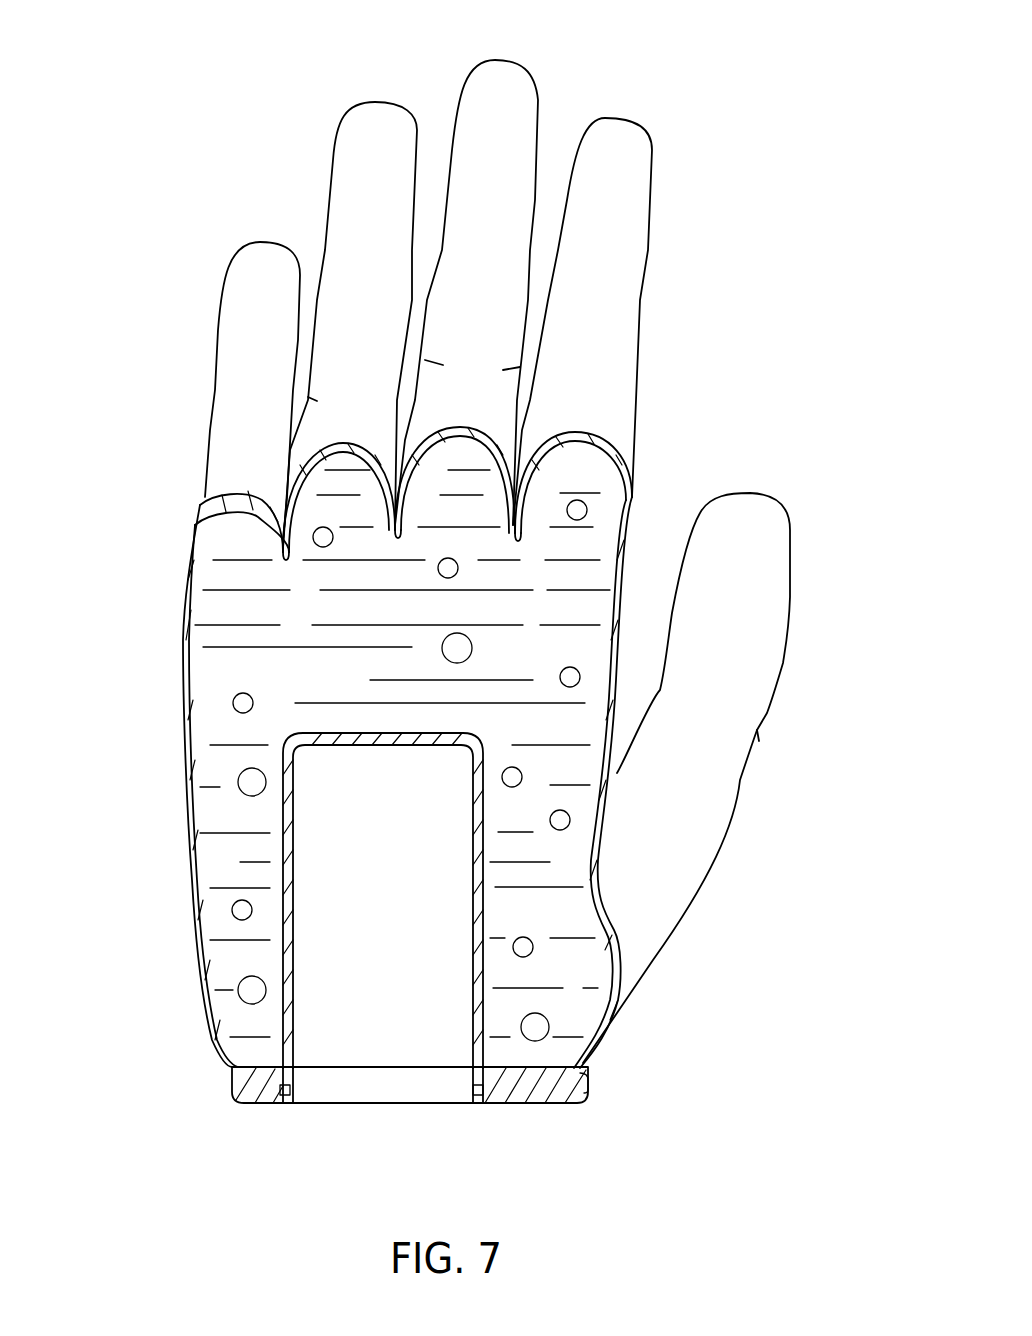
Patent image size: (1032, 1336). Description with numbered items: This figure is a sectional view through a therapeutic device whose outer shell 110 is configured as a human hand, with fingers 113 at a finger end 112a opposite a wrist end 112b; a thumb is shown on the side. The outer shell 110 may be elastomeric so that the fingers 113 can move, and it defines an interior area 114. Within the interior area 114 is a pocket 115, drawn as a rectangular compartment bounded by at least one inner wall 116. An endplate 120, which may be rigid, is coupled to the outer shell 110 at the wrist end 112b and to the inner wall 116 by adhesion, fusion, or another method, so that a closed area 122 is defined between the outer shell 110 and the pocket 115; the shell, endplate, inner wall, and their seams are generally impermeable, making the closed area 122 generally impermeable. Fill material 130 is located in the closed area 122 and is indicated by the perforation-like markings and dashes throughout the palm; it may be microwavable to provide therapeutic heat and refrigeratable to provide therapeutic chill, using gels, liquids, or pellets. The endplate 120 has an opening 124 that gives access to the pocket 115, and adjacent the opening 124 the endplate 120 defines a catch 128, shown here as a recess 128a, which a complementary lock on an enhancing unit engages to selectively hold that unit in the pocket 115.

The outer shell 110 is at (658, 200).
The finger end 112a is at (75, 140).
The wrist end 112b is at (743, 1097).
The fingers 113 is at (602, 157).
The interior area 114 is at (77, 542).
The pocket 115 is at (68, 790).
The inner wall 116 is at (283, 957).
The endplate 120 is at (537, 1092).
The closed area 122 is at (550, 727).
The opening 124 is at (245, 1240).
The catch 128 is at (362, 1187).
The recess 128a is at (478, 1105).
The fill material 130 is at (583, 575).